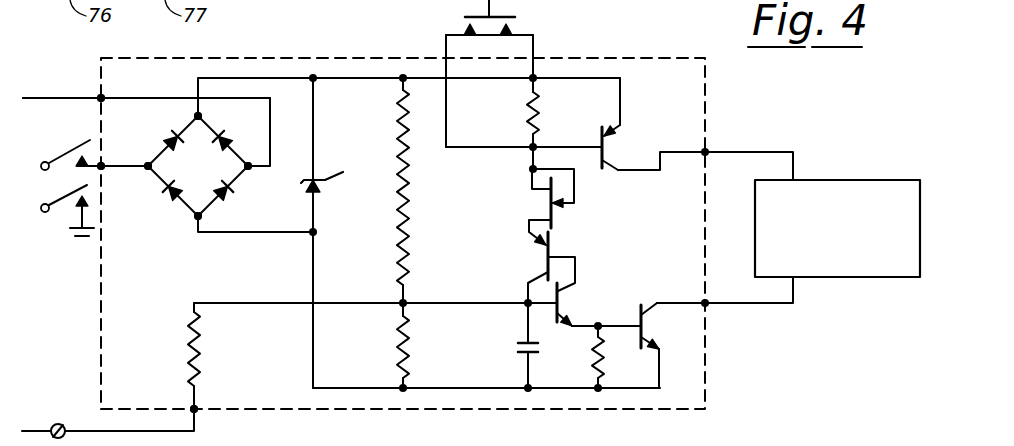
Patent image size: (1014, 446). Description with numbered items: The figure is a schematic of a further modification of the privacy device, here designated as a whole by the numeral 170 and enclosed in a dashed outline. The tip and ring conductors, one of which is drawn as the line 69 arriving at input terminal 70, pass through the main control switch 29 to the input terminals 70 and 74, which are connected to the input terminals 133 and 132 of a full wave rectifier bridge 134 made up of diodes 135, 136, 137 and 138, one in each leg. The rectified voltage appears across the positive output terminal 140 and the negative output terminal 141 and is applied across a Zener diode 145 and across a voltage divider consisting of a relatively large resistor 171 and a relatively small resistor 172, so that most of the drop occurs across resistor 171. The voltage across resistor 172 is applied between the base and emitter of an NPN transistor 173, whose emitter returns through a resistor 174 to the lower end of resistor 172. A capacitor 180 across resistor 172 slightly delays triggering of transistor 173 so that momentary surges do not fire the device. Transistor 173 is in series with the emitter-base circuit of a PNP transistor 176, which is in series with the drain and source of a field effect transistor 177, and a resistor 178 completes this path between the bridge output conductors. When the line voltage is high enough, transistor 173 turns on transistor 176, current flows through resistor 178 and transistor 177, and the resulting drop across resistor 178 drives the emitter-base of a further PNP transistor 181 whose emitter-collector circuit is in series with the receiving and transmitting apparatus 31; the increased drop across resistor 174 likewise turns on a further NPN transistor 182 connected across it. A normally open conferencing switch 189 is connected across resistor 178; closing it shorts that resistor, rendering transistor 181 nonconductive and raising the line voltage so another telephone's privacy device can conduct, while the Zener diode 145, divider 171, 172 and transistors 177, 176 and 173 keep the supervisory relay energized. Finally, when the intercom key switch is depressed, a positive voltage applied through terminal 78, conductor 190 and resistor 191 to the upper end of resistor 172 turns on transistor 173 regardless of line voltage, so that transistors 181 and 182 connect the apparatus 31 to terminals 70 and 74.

The main control switch 29 is at (70, 143).
The receiving and transmitting apparatus 31 is at (857, 180).
The supply line 69 is at (85, 97).
The input terminal 70 is at (104, 96).
The input terminal 74 is at (104, 170).
The terminal 78 is at (198, 412).
The input terminal of rectifier bridge 132 is at (153, 160).
The input terminal of rectifier bridge 133 is at (247, 173).
The full wave rectifier bridge 134 is at (202, 181).
The diode 135 is at (172, 135).
The diode 136 is at (222, 147).
The diode 137 is at (230, 201).
The diode 138 is at (174, 186).
The output terminal 140 is at (204, 116).
The output terminal 141 is at (196, 220).
The Zener diode 145 is at (325, 177).
The privacy device 170 is at (322, 56).
The resistor 171 is at (400, 121).
The resistor 172 is at (408, 341).
The NPN transistor 173 is at (572, 300).
The resistor 174 is at (604, 361).
The PNP transistor 176 is at (562, 250).
The field effect transistor 177 is at (560, 213).
The resistor 178 is at (541, 109).
The capacitor 180 is at (540, 348).
The PNP transistor 181 is at (617, 136).
The NPN transistor 182 is at (650, 327).
The conferencing switch 189 is at (516, 20).
The conductor 190 is at (196, 398).
The resistor 191 is at (200, 345).